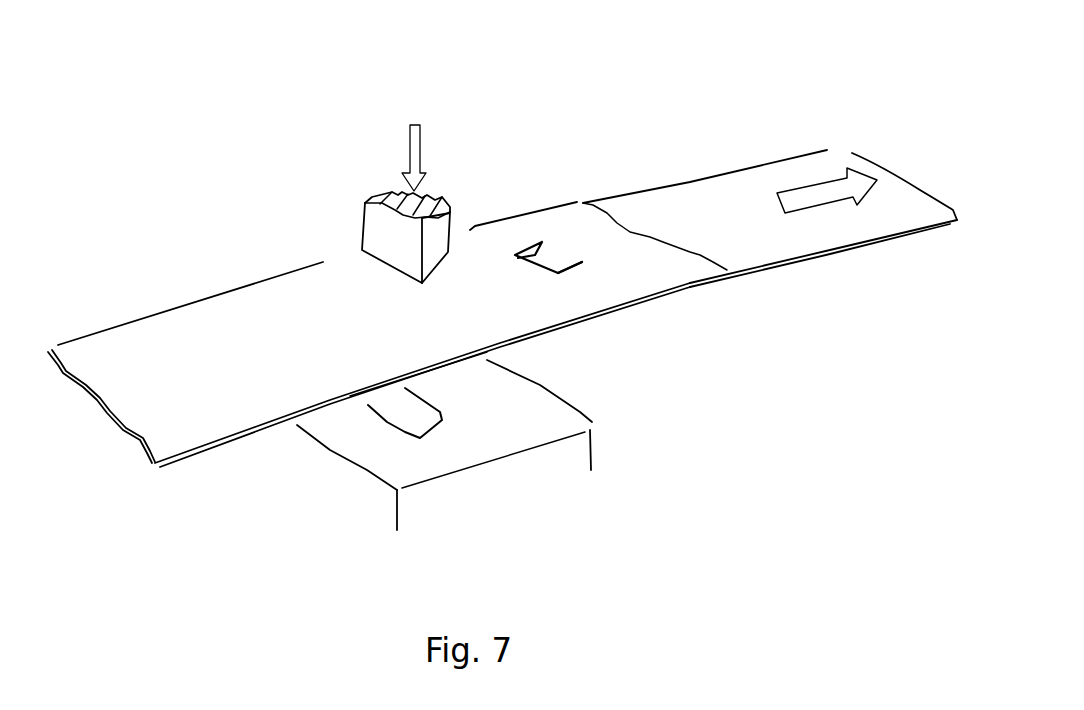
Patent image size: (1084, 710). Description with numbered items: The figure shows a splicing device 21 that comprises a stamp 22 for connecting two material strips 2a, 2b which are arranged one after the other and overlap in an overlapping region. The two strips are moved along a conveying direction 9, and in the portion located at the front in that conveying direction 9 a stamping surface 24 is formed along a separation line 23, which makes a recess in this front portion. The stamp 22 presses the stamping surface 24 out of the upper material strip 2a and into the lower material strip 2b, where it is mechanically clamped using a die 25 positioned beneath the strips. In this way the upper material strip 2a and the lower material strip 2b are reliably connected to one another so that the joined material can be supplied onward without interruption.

The upper material strip 2a is at (369, 364).
The lower material strip 2b is at (713, 218).
The conveying direction 9 is at (816, 192).
The splicing device 21 is at (352, 192).
The stamp 22 is at (440, 198).
The separation line 23 is at (572, 270).
The stamping surface 24 is at (550, 245).
The die 25 is at (385, 422).